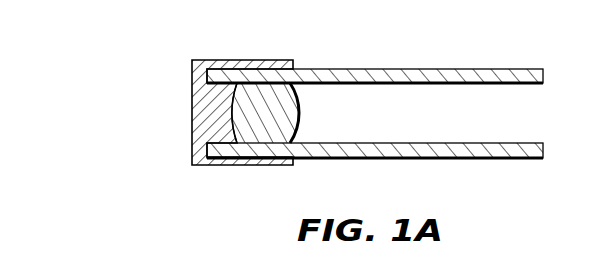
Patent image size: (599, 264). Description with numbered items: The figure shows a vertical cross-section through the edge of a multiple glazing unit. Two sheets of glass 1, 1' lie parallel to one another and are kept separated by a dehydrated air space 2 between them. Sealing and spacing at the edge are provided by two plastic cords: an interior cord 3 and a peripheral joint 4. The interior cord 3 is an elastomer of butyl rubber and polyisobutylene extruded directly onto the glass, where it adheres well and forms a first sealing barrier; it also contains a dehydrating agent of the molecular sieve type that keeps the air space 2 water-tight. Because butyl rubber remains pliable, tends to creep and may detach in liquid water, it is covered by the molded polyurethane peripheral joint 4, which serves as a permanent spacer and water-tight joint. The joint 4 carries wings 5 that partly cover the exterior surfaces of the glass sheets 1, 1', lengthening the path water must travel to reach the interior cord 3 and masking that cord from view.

The sheet of glass 1 is at (375, 54).
The sheet of glass 1' is at (375, 166).
The dehydrated air space 2 is at (458, 100).
The interior cord 3 is at (299, 116).
The peripheral joint 4 is at (193, 98).
The wings 5 is at (250, 61).